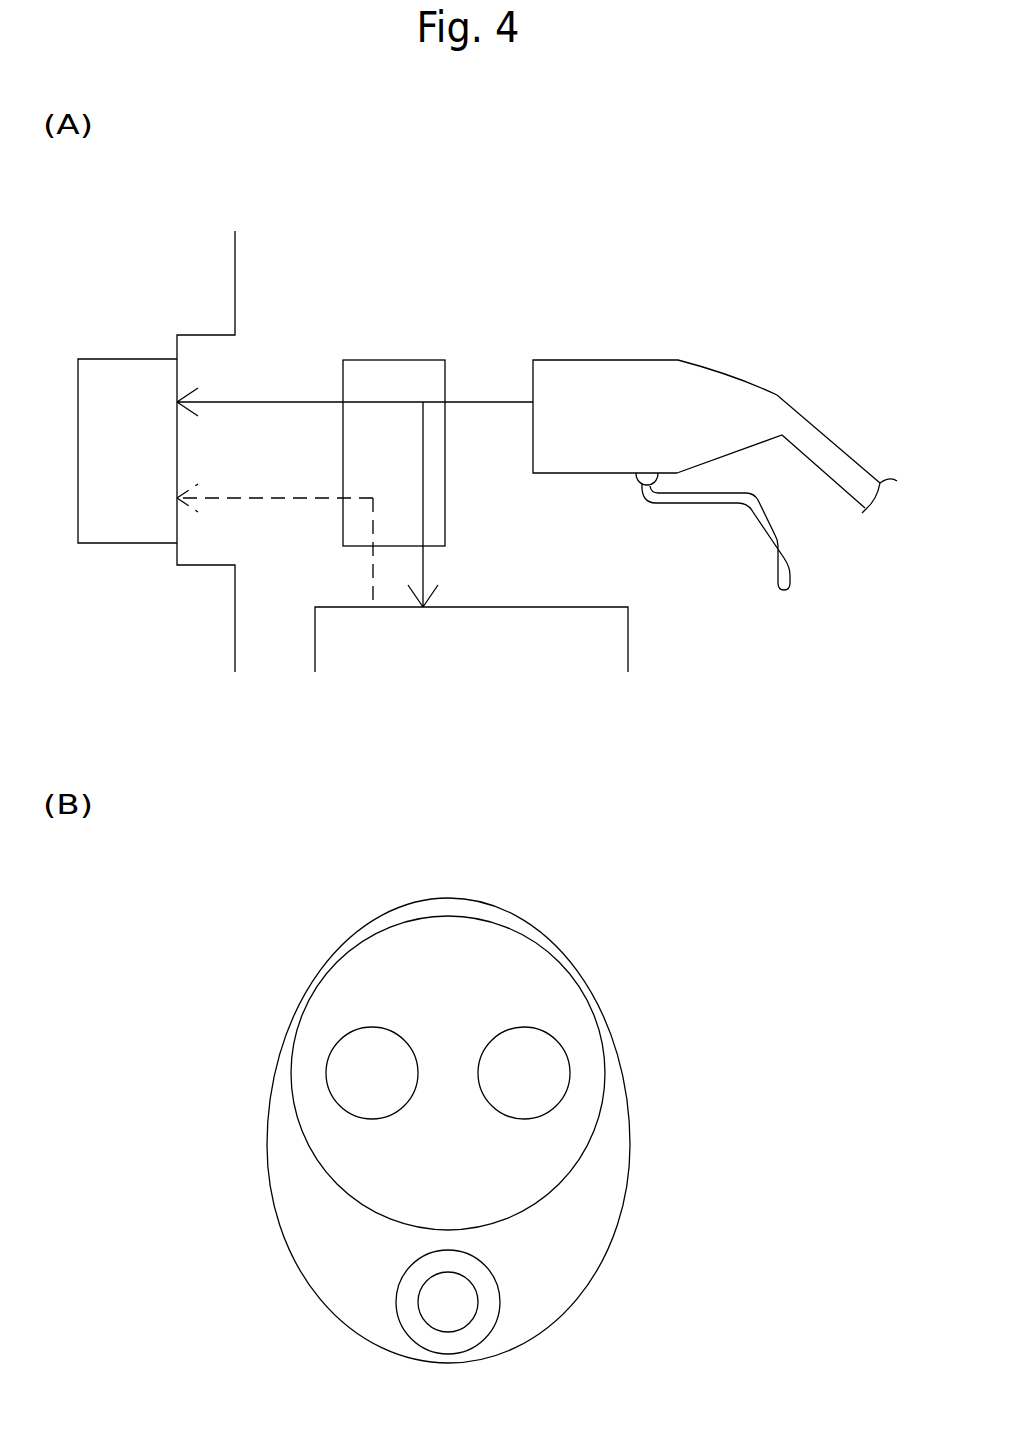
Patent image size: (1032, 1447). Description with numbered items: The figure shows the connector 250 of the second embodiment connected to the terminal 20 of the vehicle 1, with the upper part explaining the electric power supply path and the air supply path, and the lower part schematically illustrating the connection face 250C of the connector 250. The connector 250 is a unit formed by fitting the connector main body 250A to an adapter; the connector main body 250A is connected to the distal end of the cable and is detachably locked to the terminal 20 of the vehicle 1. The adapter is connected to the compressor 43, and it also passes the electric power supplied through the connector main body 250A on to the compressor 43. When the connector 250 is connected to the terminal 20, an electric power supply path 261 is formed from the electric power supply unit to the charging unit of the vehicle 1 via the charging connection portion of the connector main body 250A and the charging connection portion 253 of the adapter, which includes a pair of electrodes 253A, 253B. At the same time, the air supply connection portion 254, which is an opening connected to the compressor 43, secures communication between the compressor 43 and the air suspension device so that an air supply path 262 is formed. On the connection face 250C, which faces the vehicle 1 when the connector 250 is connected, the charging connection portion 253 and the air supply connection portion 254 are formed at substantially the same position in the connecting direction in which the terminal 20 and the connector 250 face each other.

The vehicle 1 is at (236, 251).
The terminal 20 is at (178, 375).
The connector 250 is at (452, 208).
The connector main body 250A is at (618, 360).
The connection face 250C is at (435, 957).
The electric power supply path 261 is at (488, 402).
The air supply path 262 is at (301, 501).
The compressor 43 is at (630, 636).
The charging connection portion 253 is at (737, 932).
The electrode 253A is at (373, 1072).
The electrode 253B is at (528, 1065).
The air supply connection portion 254 is at (458, 1303).